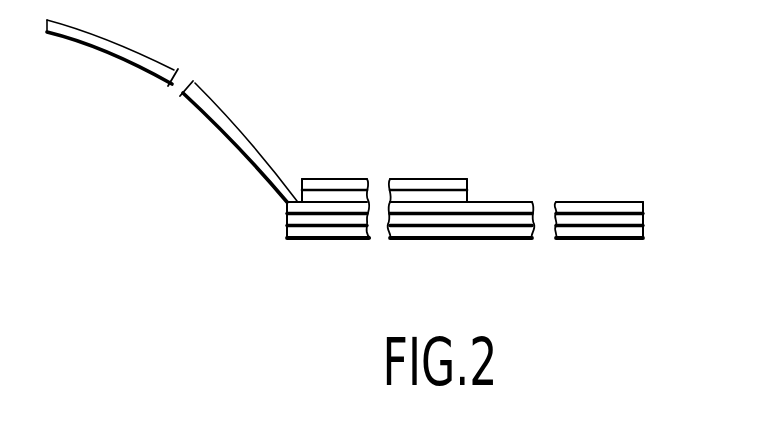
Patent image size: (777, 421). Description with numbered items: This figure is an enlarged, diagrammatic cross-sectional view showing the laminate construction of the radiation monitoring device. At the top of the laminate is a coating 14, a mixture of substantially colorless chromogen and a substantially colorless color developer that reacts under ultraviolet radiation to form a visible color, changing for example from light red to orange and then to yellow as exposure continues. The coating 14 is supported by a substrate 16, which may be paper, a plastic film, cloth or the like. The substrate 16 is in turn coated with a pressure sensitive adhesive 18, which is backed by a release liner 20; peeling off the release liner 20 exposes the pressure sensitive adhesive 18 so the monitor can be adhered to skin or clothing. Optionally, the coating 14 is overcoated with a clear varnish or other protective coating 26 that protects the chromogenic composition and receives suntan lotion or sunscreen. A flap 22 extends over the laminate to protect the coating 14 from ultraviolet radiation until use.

The coating 14 is at (428, 195).
The substrate 16 is at (617, 208).
The pressure sensitive adhesive 18 is at (635, 220).
The release liner 20 is at (610, 230).
The flap 22 is at (128, 55).
The protective coating 26 is at (343, 178).